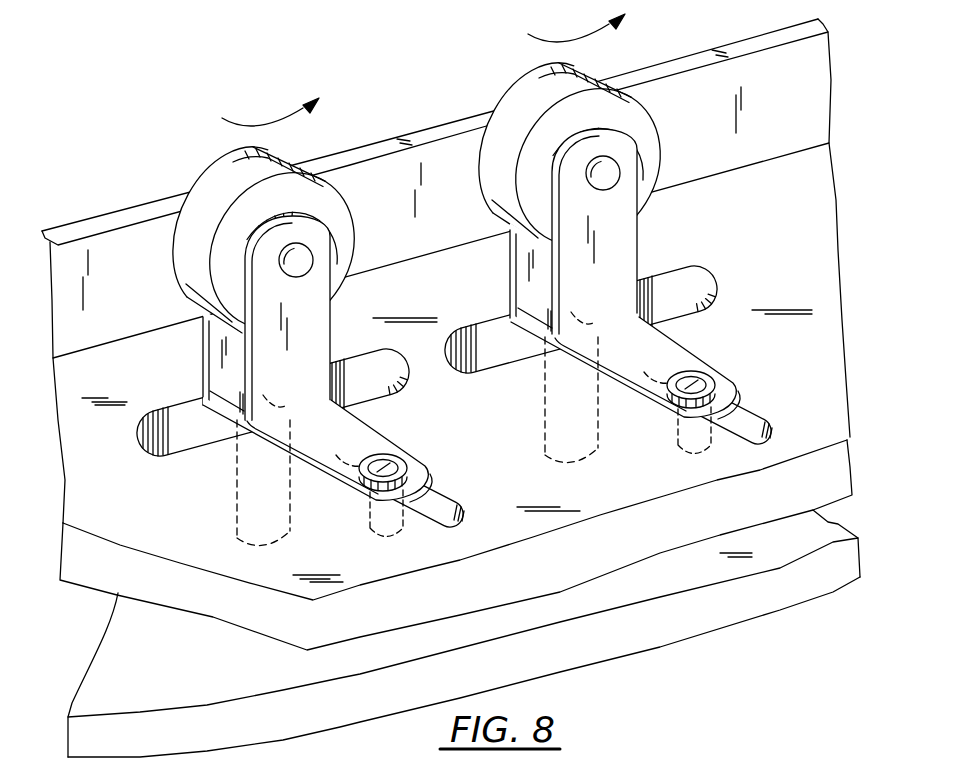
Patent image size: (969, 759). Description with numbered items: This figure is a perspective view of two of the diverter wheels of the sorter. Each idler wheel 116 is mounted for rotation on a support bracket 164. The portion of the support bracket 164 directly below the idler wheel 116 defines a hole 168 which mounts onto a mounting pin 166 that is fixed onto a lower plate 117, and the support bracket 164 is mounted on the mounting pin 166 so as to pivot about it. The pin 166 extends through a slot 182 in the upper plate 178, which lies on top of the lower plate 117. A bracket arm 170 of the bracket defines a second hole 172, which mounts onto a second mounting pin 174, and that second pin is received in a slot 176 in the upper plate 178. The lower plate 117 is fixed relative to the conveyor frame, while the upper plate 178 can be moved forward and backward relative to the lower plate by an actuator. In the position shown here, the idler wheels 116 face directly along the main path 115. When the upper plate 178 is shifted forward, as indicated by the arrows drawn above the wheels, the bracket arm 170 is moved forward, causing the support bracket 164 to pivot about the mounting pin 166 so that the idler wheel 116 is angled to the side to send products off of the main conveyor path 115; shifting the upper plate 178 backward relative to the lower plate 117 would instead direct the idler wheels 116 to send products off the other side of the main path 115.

The main path 115 is at (627, 483).
The idler wheel 116 is at (233, 177).
The lower plate 117 is at (173, 653).
The support bracket 164 is at (293, 312).
The mounting pin 166 is at (240, 495).
The hole 168 is at (282, 390).
The bracket arm 170 is at (327, 437).
The second hole 172 is at (403, 463).
The second mounting pin 174 is at (370, 517).
The slot 176 is at (437, 497).
The upper plate 178 is at (777, 312).
The slot 182 is at (180, 420).